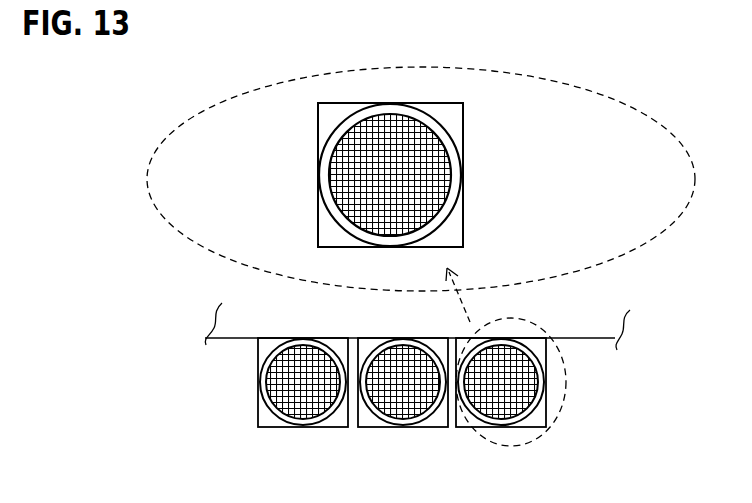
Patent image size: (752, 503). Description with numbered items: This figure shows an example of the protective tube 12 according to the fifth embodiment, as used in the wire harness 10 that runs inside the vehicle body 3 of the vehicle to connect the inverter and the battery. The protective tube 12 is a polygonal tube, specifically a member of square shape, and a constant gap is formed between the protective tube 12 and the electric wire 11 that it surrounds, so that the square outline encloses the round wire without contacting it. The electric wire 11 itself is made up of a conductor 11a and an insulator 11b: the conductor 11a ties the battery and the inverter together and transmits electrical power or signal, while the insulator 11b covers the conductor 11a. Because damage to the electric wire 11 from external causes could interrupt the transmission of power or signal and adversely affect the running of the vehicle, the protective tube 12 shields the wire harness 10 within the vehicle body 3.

The vehicle body 3 is at (236, 330).
The wire harness 10 is at (570, 428).
The electric wire 11 is at (435, 176).
The conductor 11a is at (420, 205).
The insulator 11b is at (457, 150).
The protective tube 12 is at (318, 227).